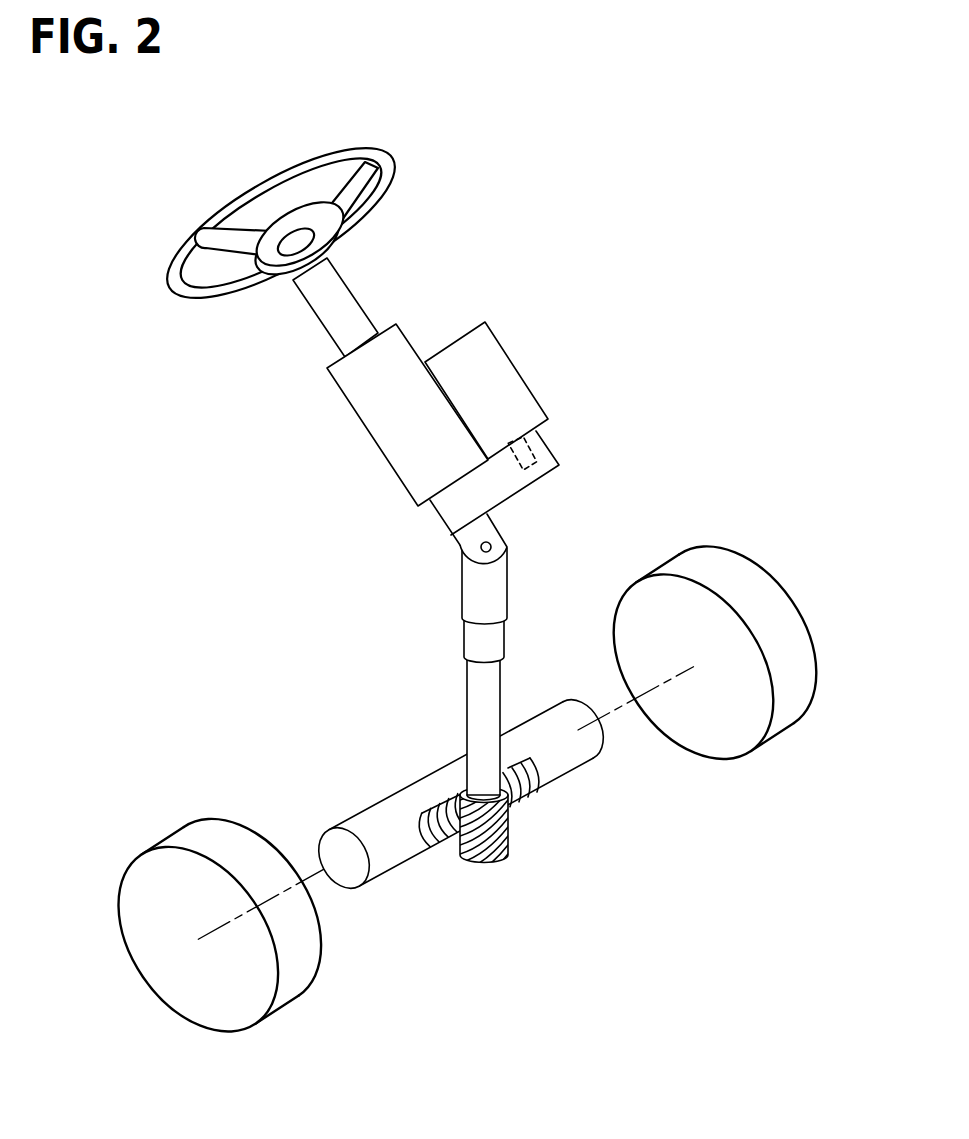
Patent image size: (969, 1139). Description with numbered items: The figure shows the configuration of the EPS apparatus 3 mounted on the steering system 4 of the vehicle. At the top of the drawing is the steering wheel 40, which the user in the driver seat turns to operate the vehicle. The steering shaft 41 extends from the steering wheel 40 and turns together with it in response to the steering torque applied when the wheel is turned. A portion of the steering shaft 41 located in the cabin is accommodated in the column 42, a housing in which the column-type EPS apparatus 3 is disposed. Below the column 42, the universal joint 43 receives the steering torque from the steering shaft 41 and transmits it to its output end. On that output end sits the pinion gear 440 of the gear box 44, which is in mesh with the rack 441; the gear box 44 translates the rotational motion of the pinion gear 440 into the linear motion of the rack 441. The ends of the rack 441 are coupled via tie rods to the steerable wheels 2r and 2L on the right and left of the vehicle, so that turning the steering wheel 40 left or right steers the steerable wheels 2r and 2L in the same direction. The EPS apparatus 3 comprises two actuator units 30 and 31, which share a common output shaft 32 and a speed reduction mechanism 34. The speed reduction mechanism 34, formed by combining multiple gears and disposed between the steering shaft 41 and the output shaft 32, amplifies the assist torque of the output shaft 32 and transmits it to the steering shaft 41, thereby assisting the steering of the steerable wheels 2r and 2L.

The steerable wheel 2L is at (793, 620).
The steerable wheel 2r is at (133, 920).
The EPS apparatus 3 is at (564, 396).
The actuator unit 30 is at (543, 390).
The actuator unit 31 is at (527, 380).
The output shaft 32 is at (526, 443).
The speed reduction mechanism 34 is at (553, 447).
The steering system 4 is at (412, 460).
The steering wheel 40 is at (387, 162).
The steering shaft 41 is at (340, 293).
The column 42 is at (403, 343).
The universal joint 43 is at (508, 548).
The gear box 44 is at (486, 794).
The pinion gear 440 is at (490, 827).
The rack 441 is at (526, 789).